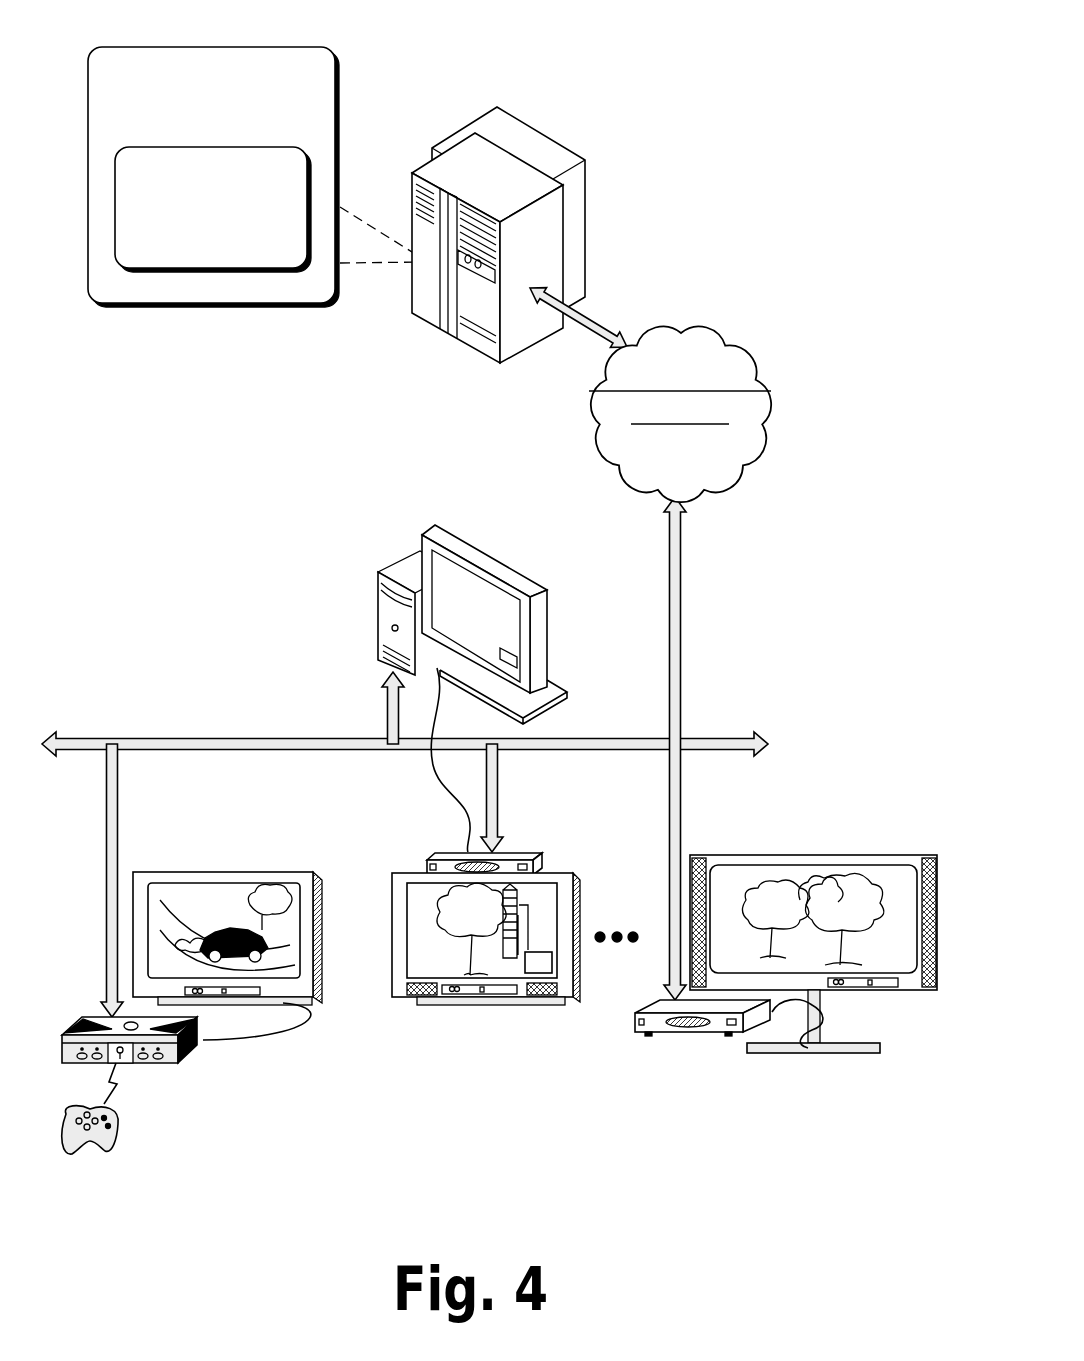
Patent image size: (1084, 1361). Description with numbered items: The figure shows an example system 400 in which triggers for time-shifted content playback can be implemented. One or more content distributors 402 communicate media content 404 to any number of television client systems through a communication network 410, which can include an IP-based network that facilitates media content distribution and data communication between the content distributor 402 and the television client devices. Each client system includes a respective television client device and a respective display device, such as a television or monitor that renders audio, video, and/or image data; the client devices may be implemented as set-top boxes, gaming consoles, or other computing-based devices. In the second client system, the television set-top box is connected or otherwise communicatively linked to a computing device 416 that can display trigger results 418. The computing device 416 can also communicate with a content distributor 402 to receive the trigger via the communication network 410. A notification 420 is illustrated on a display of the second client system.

The system 400 is at (837, 39).
The content distributor 402 is at (190, 126).
The media content 404 is at (189, 234).
The communication network 410 is at (658, 467).
The computing device 416 is at (456, 613).
The trigger results 418 is at (510, 647).
The notification on television 420 is at (542, 975).